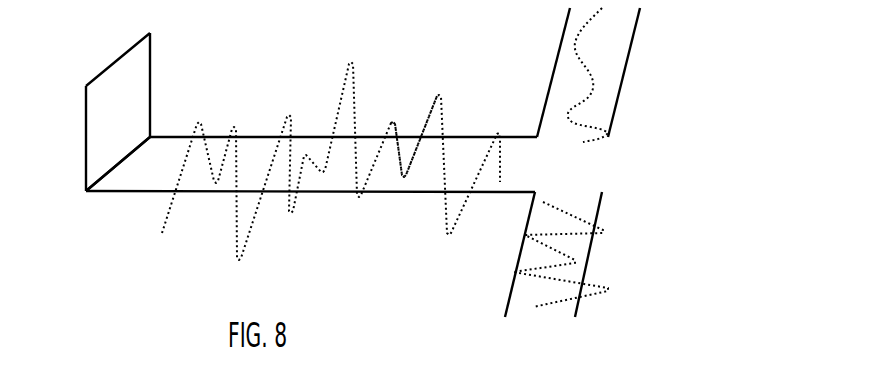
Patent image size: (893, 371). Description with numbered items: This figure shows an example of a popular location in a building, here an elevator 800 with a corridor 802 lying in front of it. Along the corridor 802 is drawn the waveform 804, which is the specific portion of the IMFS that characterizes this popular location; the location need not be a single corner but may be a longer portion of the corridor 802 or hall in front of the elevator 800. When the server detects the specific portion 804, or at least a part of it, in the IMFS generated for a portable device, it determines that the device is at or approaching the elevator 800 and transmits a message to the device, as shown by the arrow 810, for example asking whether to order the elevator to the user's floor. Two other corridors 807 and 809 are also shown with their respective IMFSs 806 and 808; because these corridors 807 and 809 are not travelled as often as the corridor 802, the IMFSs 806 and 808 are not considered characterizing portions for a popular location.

The elevator 800 is at (86, 134).
The corridor 802 is at (118, 193).
The waveform 804 is at (357, 83).
The IMFS 806 is at (577, 43).
The corridor 807 is at (625, 63).
The IMFS 808 is at (588, 282).
The corridor 809 is at (602, 212).
The arrow 810 is at (406, 180).